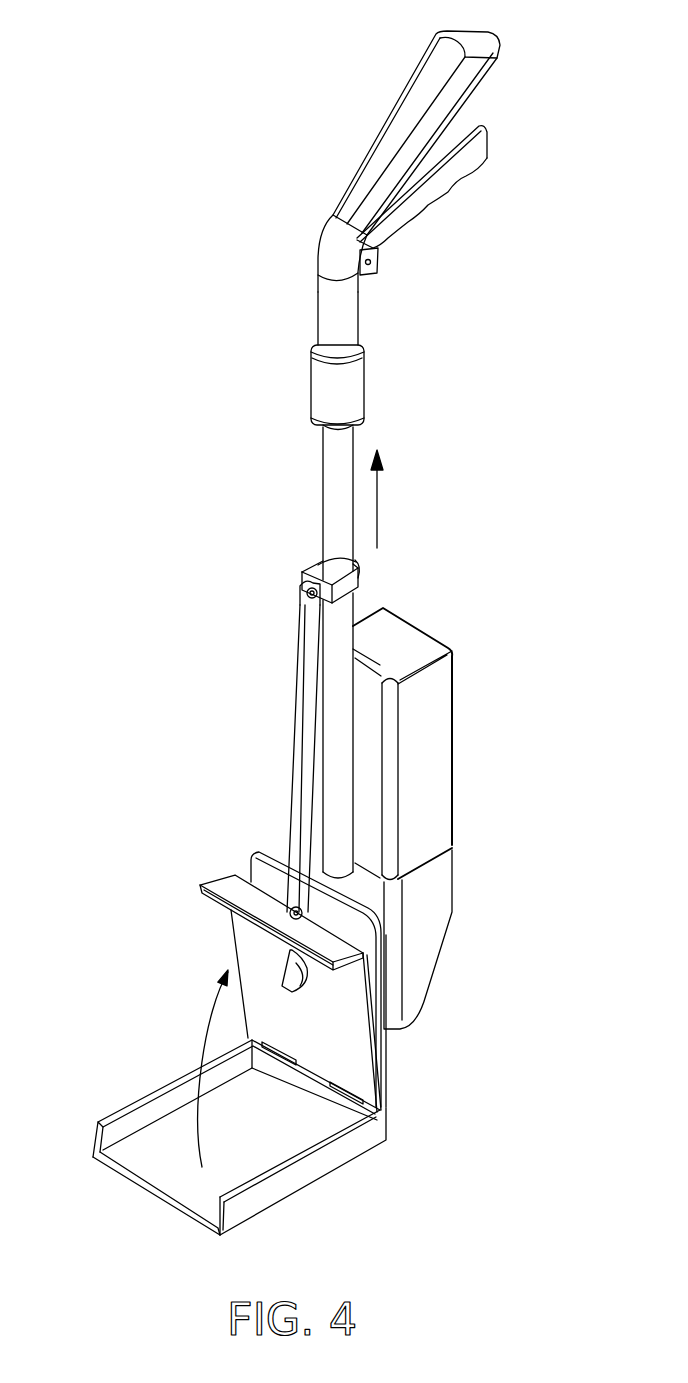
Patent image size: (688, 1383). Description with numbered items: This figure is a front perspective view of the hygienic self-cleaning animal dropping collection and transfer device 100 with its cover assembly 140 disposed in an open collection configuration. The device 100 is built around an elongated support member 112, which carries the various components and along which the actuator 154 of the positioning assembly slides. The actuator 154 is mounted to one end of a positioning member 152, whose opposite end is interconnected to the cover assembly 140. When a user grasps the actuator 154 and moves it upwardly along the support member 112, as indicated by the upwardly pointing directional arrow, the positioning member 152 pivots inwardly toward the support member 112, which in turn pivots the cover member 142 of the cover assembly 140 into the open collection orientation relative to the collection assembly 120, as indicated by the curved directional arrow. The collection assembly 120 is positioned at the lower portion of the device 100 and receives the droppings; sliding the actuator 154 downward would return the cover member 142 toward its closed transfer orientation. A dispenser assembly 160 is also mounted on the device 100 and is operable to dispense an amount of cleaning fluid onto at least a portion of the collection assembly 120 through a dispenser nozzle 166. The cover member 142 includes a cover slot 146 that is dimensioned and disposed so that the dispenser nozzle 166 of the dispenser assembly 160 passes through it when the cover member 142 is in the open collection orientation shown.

The hygienic self-cleaning animal dropping collection and transfer device 100 is at (128, 258).
The support member 112 is at (323, 490).
The collection assembly 120 is at (342, 1172).
The cover assembly 140 is at (207, 933).
The cover member 142 is at (380, 1078).
The cover slot 146 is at (388, 1028).
The positioning member 152 is at (295, 667).
The actuator 154 is at (361, 566).
The dispenser assembly 160 is at (472, 847).
The dispenser nozzle 166 is at (375, 1048).